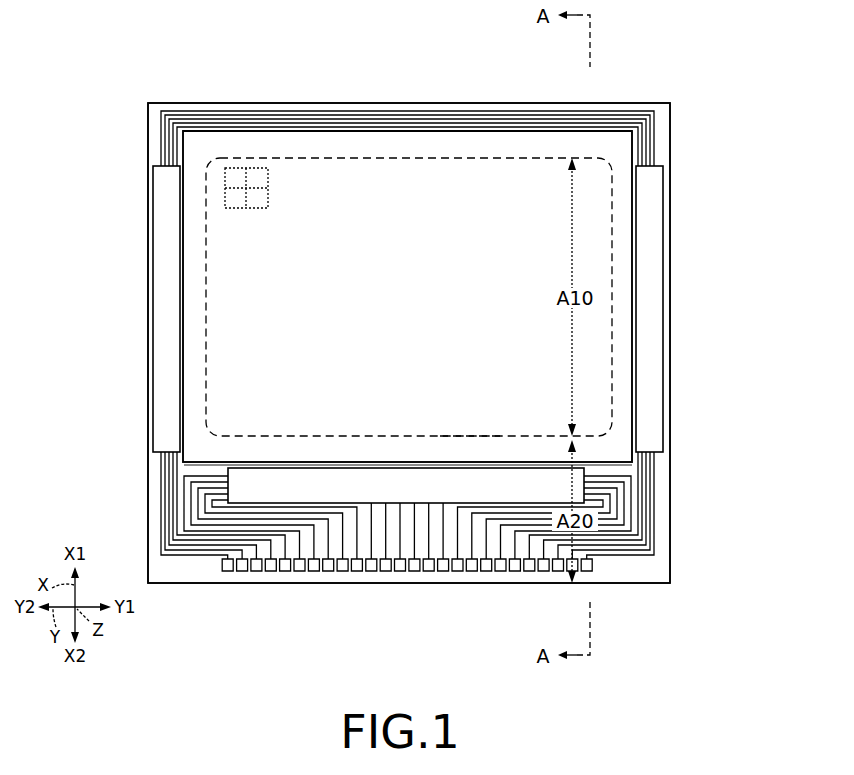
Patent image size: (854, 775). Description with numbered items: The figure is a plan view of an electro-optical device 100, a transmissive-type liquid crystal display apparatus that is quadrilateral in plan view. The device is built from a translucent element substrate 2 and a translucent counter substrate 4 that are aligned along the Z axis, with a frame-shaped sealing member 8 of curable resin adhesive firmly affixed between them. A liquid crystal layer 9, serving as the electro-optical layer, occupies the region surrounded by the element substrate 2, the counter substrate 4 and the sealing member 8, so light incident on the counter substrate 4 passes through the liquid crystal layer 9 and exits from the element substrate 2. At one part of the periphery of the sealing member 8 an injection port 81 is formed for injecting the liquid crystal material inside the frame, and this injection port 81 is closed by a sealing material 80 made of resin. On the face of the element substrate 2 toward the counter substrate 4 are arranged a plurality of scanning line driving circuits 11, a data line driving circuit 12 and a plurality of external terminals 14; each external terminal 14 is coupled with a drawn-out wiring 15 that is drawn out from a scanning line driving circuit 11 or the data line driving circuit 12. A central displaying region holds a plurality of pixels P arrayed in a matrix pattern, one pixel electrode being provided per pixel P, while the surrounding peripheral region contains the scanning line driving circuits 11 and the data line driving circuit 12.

The electro-optical device 100 is at (677, 88).
The element substrate 2 is at (609, 104).
The counter substrate 4 is at (533, 120).
The sealing member 8 is at (487, 144).
The liquid crystal layer 9 is at (395, 236).
The scanning line driving circuit 11 is at (153, 356).
The data line driving circuit 12 is at (368, 488).
The external terminal 14 is at (255, 568).
The drawn-out wiring 15 is at (276, 106).
The sealing material 80 is at (416, 470).
The injection port 81 is at (458, 437).
The pixel P is at (237, 197).